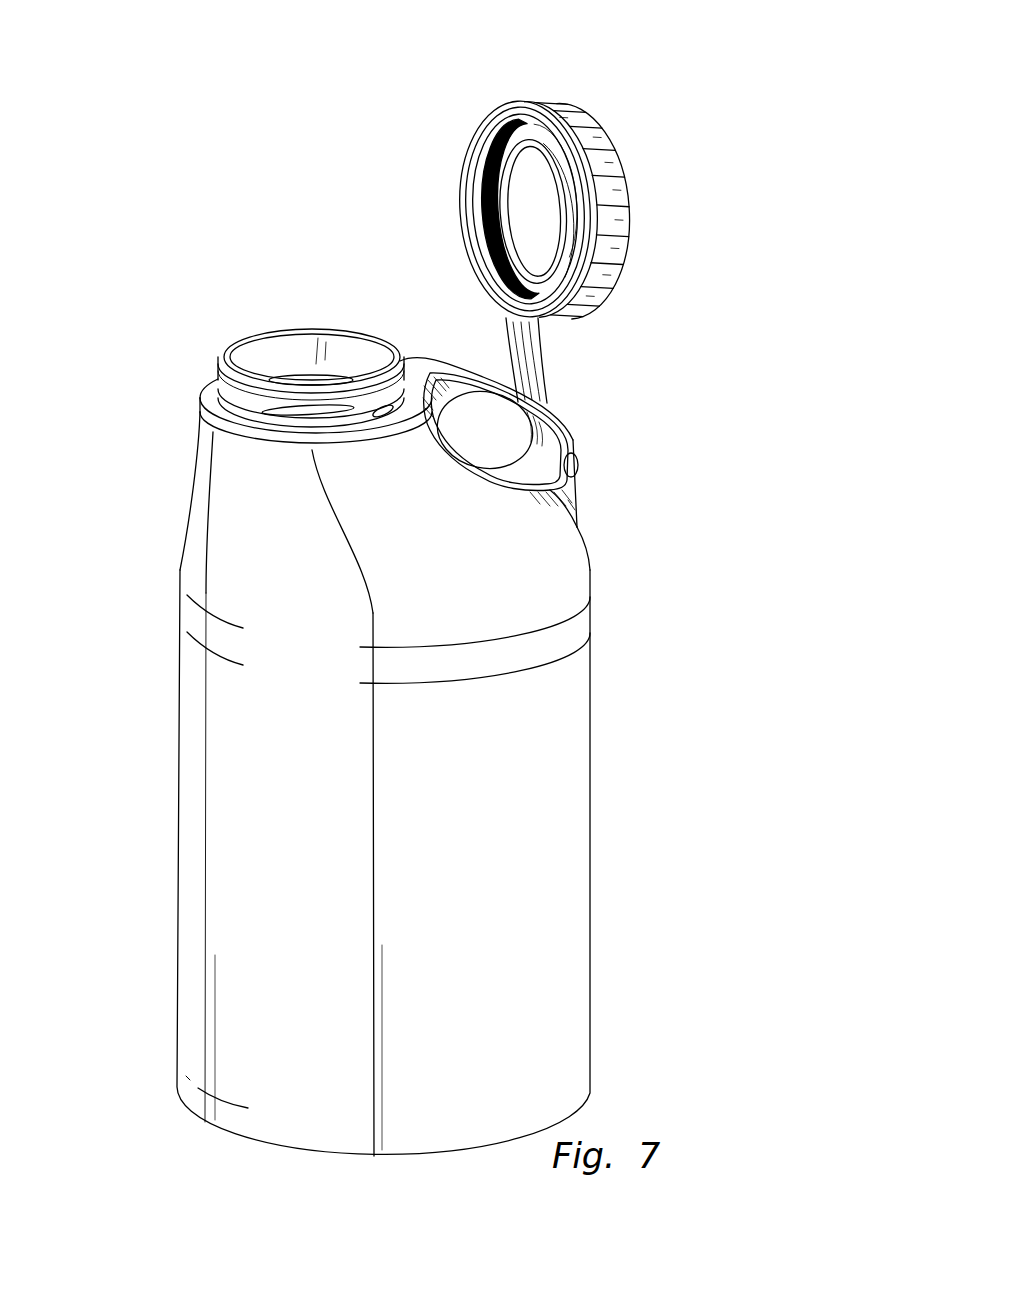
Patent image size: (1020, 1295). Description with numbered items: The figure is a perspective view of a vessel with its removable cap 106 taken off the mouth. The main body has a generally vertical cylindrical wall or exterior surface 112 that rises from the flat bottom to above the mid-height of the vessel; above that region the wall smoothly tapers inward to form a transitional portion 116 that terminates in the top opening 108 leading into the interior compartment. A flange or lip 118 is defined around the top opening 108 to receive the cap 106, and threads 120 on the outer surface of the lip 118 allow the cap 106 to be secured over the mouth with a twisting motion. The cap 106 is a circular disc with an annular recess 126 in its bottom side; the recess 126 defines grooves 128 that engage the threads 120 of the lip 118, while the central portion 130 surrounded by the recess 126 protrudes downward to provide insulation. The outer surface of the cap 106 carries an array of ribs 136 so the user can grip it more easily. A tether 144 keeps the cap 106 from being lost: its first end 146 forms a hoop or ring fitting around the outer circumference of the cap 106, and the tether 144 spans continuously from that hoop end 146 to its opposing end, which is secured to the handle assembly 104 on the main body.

The handle assembly 104 is at (573, 432).
The removable cap 106 is at (588, 138).
The opening 108 is at (277, 343).
The exterior surface 112 is at (592, 830).
The transitional portion 116 is at (513, 536).
The lip 118 is at (250, 340).
The threads 120 is at (210, 393).
The annular recess 126 is at (490, 147).
The grooves 128 is at (480, 173).
The central portion 130 is at (519, 190).
The ribs 136 is at (600, 183).
The tether 144 is at (547, 356).
The first end 146 is at (583, 245).